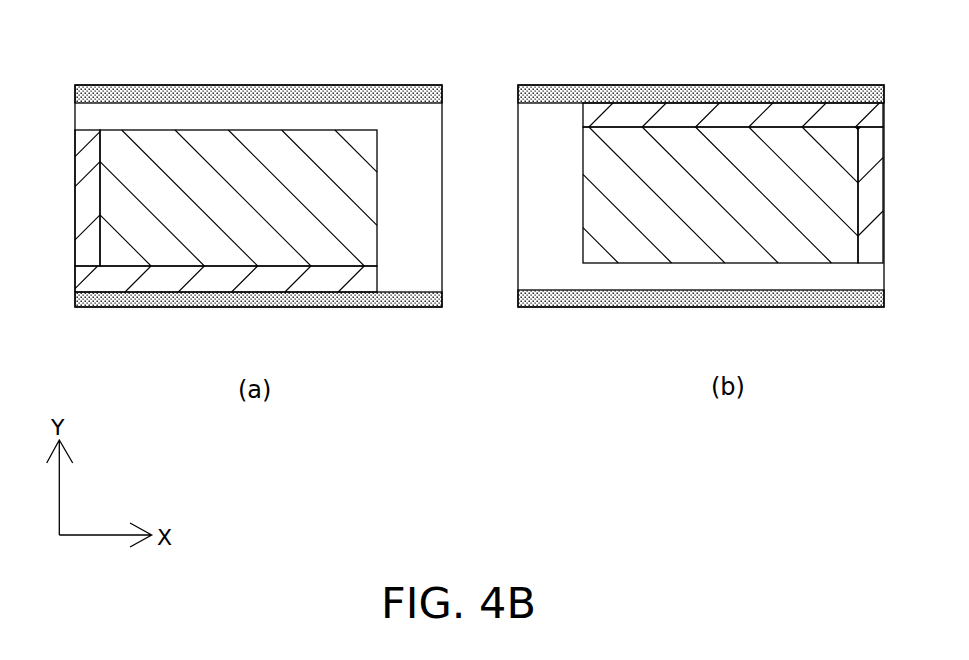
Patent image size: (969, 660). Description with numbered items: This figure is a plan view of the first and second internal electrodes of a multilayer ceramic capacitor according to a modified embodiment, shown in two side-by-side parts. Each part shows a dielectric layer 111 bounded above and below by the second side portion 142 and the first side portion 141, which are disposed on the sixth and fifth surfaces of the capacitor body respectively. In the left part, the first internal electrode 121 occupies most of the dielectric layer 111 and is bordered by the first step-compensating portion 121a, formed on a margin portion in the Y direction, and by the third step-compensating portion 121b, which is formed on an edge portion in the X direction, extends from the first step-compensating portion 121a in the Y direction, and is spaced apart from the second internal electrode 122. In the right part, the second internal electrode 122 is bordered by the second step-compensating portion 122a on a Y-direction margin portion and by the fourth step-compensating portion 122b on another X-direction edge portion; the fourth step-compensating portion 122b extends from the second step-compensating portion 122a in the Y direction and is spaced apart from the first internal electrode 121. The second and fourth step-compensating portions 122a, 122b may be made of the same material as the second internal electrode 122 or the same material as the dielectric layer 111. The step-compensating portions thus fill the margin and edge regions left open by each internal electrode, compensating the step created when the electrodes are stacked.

The dielectric layer 111 is at (415, 267).
The first internal electrode 121 is at (132, 251).
The first step-compensating portion 121a is at (290, 278).
The third step-compensating portion 121b is at (87, 153).
The second internal electrode 122 is at (672, 142).
The second step-compensating portion 122a is at (752, 116).
The fourth step-compensating portion 122b is at (875, 251).
The first side portion 141 is at (212, 300).
The second side portion 142 is at (297, 94).